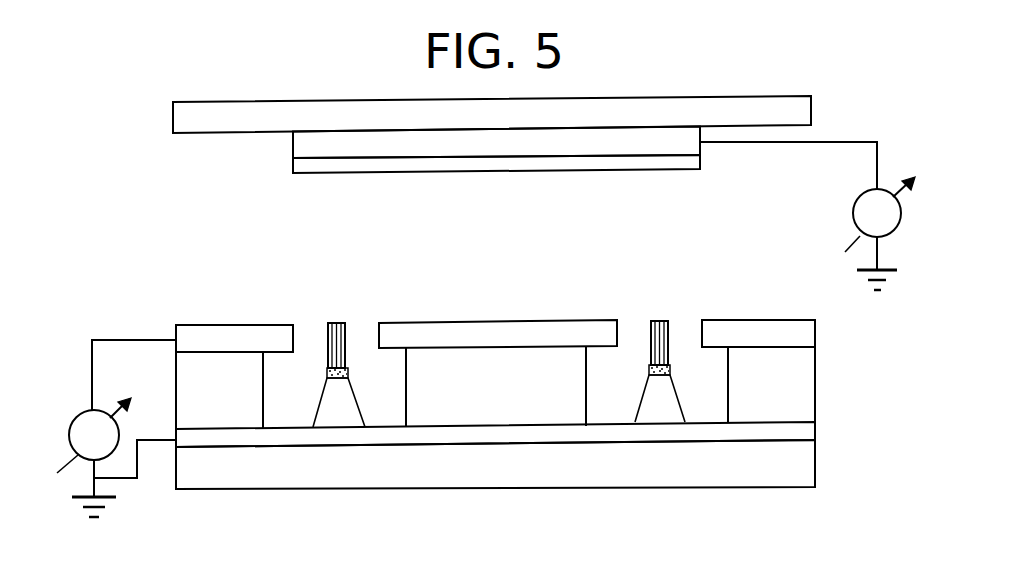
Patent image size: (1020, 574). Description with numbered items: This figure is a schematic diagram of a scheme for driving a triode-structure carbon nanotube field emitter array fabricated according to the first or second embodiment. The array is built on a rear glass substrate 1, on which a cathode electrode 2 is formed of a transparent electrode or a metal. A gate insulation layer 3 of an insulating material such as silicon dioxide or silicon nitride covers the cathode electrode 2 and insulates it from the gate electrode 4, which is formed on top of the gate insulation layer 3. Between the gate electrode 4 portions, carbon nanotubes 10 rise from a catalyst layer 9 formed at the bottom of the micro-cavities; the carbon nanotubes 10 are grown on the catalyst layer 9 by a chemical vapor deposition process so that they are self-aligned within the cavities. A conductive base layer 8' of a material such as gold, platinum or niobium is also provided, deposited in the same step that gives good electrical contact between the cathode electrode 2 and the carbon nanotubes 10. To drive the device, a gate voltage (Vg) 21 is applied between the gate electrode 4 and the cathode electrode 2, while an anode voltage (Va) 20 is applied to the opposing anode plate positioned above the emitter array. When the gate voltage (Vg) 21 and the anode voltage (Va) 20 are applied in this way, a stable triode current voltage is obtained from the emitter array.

The rear glass substrate 1 is at (187, 118).
The cathode electrode 2 is at (303, 147).
The gate insulation layer 3 is at (303, 167).
The gate electrode 4 is at (232, 325).
The base layer 8' is at (518, 393).
The catalyst layer 9 is at (330, 373).
The carbon nanotubes 10 is at (336, 320).
The anode voltage (Va) 20 is at (853, 212).
The gate voltage (Vg) 21 is at (72, 420).